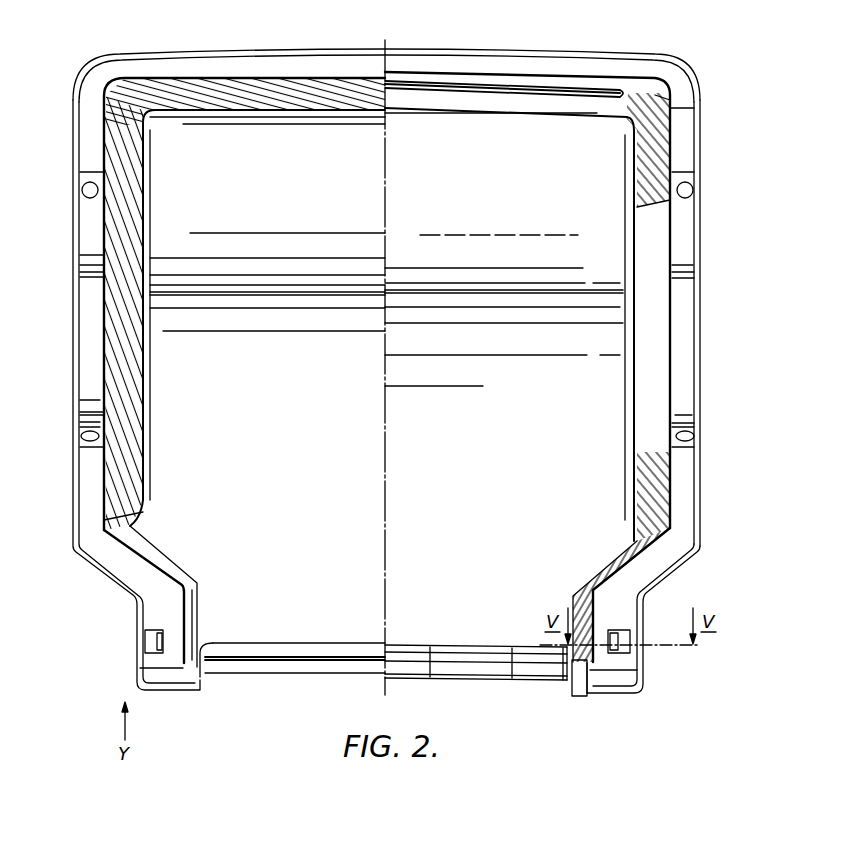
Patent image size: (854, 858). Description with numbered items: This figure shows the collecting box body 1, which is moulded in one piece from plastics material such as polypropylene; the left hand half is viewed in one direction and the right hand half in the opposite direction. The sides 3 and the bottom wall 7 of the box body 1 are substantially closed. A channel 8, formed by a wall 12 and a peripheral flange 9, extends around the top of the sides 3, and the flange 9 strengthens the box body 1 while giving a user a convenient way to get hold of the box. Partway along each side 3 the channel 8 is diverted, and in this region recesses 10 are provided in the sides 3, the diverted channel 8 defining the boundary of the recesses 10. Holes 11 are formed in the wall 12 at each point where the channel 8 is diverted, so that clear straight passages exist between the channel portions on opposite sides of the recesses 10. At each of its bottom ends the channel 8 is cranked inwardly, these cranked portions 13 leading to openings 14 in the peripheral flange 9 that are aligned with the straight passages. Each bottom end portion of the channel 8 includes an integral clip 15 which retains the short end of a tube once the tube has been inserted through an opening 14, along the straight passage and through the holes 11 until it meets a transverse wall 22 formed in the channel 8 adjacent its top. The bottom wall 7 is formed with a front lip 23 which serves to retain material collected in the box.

The collecting box body 1 is at (695, 67).
The side 3 is at (105, 323).
The bottom wall 7 is at (318, 471).
The channel 8 is at (687, 145).
The peripheral flange 9 is at (575, 50).
The recess 10 is at (86, 368).
The hole 11 is at (83, 189).
The wall 12 is at (467, 58).
The cranked portion 13 is at (122, 563).
The opening 14 is at (687, 562).
The clip 15 is at (147, 640).
The transverse wall 22 is at (683, 107).
The front lip 23 is at (473, 642).